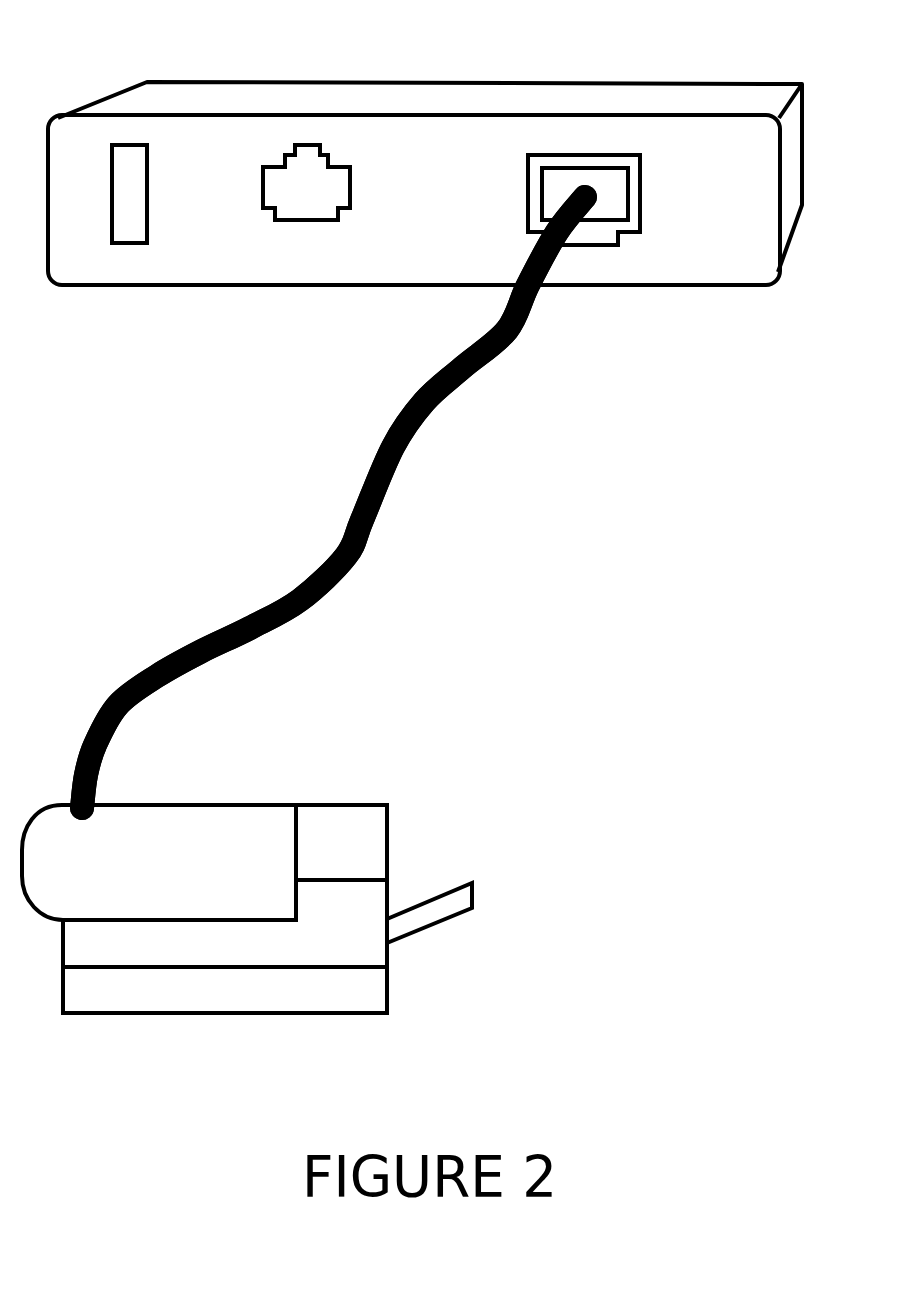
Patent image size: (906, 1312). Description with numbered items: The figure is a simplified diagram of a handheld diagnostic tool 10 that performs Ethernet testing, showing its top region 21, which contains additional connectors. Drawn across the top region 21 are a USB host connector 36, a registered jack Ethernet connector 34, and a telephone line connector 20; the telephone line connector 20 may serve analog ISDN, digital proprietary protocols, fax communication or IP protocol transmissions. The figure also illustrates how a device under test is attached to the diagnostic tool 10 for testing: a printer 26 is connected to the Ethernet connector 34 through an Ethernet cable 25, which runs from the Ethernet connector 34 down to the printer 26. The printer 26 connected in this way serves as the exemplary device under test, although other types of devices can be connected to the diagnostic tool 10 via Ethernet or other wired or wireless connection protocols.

The diagnostic tool 10 is at (333, 95).
The telephone line connector 20 is at (352, 180).
The top region 21 is at (775, 288).
The Ethernet cable 25 is at (358, 548).
The printer 26 is at (280, 1013).
The RJ-45 Ethernet connector 34 is at (642, 194).
The USB host connector 36 is at (148, 213).